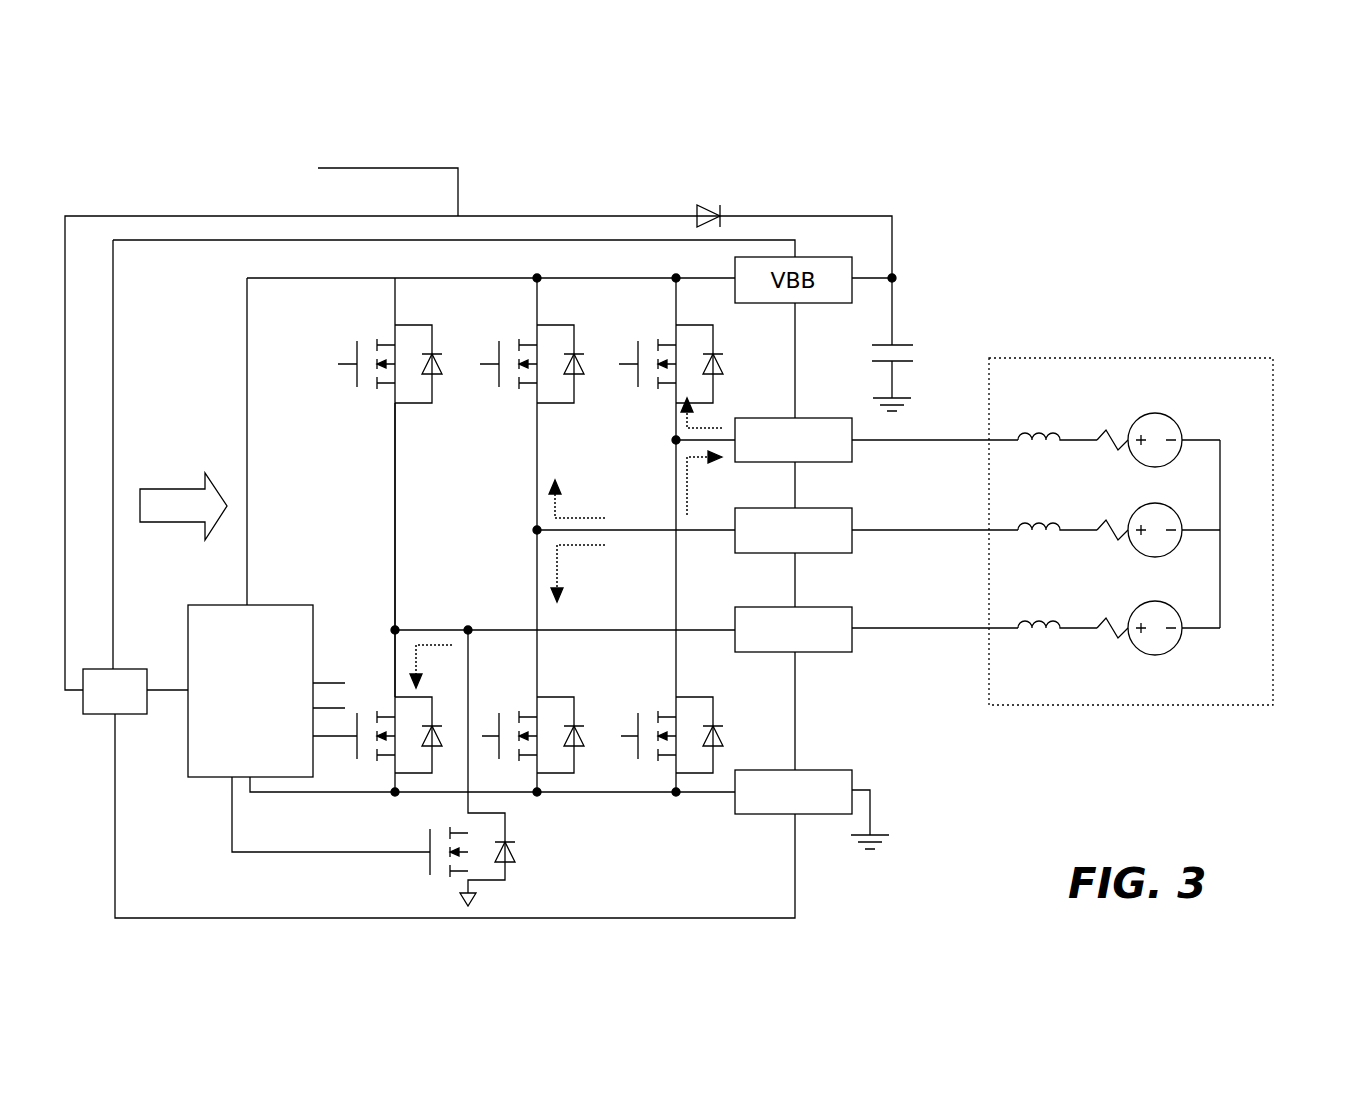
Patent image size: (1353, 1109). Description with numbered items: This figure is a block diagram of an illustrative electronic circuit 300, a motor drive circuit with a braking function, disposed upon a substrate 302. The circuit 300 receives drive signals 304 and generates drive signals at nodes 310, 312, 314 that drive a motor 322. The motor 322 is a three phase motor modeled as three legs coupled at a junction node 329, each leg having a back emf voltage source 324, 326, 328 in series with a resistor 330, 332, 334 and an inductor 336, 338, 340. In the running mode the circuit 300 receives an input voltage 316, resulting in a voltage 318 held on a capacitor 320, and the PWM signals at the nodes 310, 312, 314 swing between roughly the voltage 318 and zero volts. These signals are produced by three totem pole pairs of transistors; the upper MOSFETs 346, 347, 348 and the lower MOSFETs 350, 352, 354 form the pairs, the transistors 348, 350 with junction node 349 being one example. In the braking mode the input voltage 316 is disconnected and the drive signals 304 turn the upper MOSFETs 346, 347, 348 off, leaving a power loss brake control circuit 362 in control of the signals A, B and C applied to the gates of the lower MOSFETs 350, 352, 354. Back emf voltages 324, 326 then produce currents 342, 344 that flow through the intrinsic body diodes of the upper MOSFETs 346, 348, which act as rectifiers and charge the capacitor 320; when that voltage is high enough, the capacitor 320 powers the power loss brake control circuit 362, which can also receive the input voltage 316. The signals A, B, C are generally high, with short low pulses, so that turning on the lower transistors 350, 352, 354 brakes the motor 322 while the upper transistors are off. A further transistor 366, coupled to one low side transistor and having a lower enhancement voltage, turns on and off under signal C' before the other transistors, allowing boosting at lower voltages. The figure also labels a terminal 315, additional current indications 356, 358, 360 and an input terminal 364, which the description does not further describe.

The electronic circuit 300 is at (1058, 240).
The substrate 302 is at (560, 240).
The drive signals 304 is at (185, 524).
The node 310 is at (810, 418).
The node 312 is at (835, 508).
The node 314 is at (838, 607).
The LSS pin 315 is at (832, 770).
The input voltage 316 is at (400, 168).
The voltage 318 is at (812, 216).
The capacitor 320 is at (900, 344).
The motor 322 is at (1203, 358).
The back emf voltage source 324 is at (1180, 425).
The back emf voltage source 326 is at (1180, 515).
The back emf voltage source 328 is at (1180, 607).
The junction node 329 is at (1220, 532).
The resistor 330 is at (1105, 446).
The resistor 332 is at (1106, 538).
The resistor 334 is at (1108, 638).
The inductor 336 is at (1035, 432).
The inductor 338 is at (1035, 522).
The inductor 340 is at (1035, 620).
The current 342 is at (718, 426).
The current 344 is at (583, 518).
The upper MOSFET 346 is at (713, 336).
The upper MOSFET 347 is at (556, 325).
The upper MOSFET 348 is at (410, 325).
The junction node 349 is at (393, 557).
The lower MOSFET 350 is at (695, 697).
The lower MOSFET 352 is at (561, 697).
The lower MOSFET 354 is at (396, 697).
The current path 356 is at (425, 645).
The current path 358 is at (558, 564).
The current path 360 is at (690, 503).
The power loss brake control circuit 362 is at (233, 754).
The VIN pin 364 is at (128, 714).
The transistor 366 is at (507, 813).